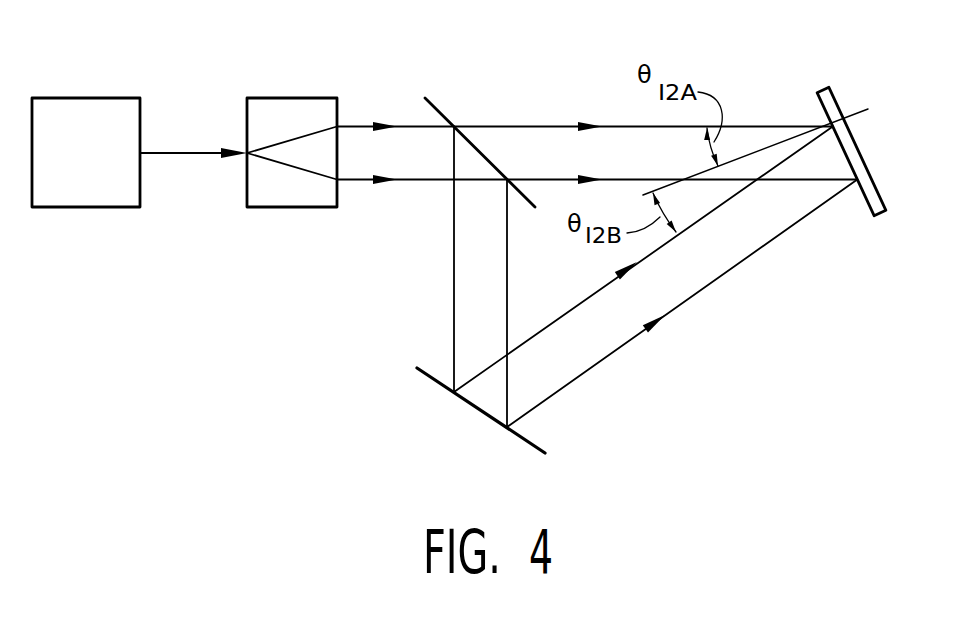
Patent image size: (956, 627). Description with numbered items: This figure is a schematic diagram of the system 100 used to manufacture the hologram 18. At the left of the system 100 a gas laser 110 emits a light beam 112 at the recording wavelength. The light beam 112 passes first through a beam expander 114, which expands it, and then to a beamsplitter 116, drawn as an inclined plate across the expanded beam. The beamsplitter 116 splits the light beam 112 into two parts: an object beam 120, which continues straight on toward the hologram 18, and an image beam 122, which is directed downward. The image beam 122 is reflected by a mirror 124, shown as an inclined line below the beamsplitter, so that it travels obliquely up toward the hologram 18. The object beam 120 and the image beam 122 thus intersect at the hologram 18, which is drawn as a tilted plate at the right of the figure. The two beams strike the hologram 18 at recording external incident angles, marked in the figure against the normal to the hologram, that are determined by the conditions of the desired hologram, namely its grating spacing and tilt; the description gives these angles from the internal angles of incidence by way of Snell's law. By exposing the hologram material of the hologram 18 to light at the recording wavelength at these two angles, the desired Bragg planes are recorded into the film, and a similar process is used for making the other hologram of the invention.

The gas laser 110 is at (60, 95).
The light beam 112 is at (155, 150).
The beam expander 114 is at (272, 95).
The beamsplitter 116 is at (436, 104).
The object beam 120 is at (495, 125).
The image beam 122 is at (454, 303).
The mirror 124 is at (430, 380).
The hologram 18 is at (835, 100).
The system 100 is at (243, 440).